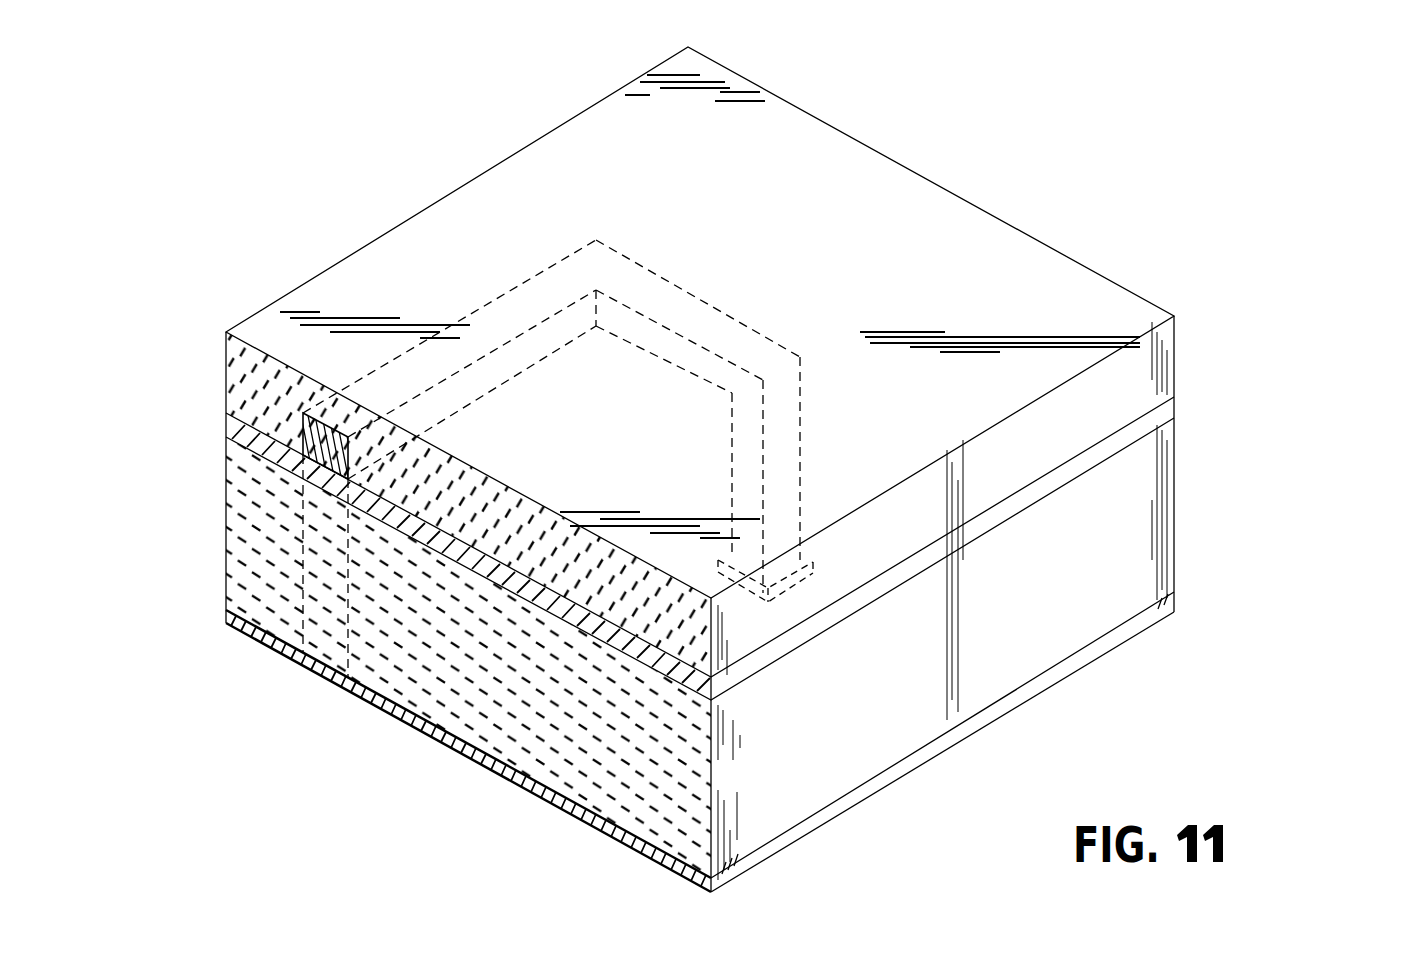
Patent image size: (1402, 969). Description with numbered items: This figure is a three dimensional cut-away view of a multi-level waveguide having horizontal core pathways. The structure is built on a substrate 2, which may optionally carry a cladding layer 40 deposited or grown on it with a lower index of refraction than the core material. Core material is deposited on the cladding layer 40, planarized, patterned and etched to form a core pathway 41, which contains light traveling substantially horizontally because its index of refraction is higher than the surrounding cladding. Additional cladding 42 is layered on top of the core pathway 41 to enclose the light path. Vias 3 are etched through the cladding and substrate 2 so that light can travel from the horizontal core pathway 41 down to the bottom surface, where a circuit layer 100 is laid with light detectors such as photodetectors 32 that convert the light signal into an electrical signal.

The core pathway 41 is at (647, 292).
The via 3 is at (800, 430).
The cladding 42 is at (1174, 357).
The cladding layer 40 is at (1168, 405).
The substrate 2 is at (1170, 497).
The circuit layer 100 is at (1174, 602).
The photodetector 32 is at (325, 675).